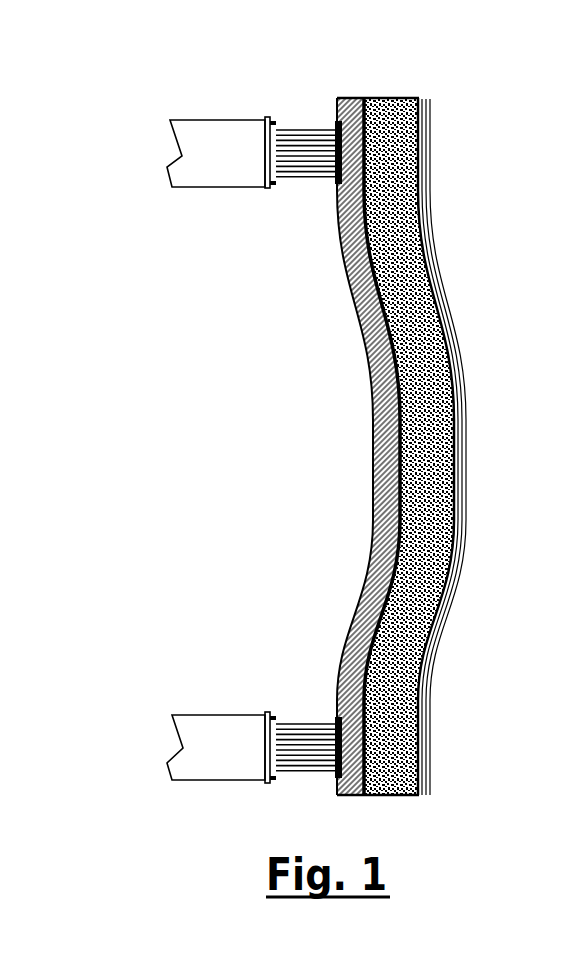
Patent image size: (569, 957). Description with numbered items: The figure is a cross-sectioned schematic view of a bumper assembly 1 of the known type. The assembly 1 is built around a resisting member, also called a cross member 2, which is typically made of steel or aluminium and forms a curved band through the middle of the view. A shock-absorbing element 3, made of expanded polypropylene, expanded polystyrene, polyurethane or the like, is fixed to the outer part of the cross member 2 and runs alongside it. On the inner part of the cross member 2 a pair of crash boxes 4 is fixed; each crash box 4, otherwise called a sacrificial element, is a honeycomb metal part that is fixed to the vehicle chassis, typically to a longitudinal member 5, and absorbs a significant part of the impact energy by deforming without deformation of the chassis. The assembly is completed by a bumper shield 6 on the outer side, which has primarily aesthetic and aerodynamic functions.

The bumper assembly 1 is at (250, 432).
The cross member 2 is at (362, 578).
The shock-absorbing element 3 is at (378, 97).
The crash box 4 is at (312, 173).
The longitudinal member 5 is at (213, 167).
The bumper shield 6 is at (462, 422).